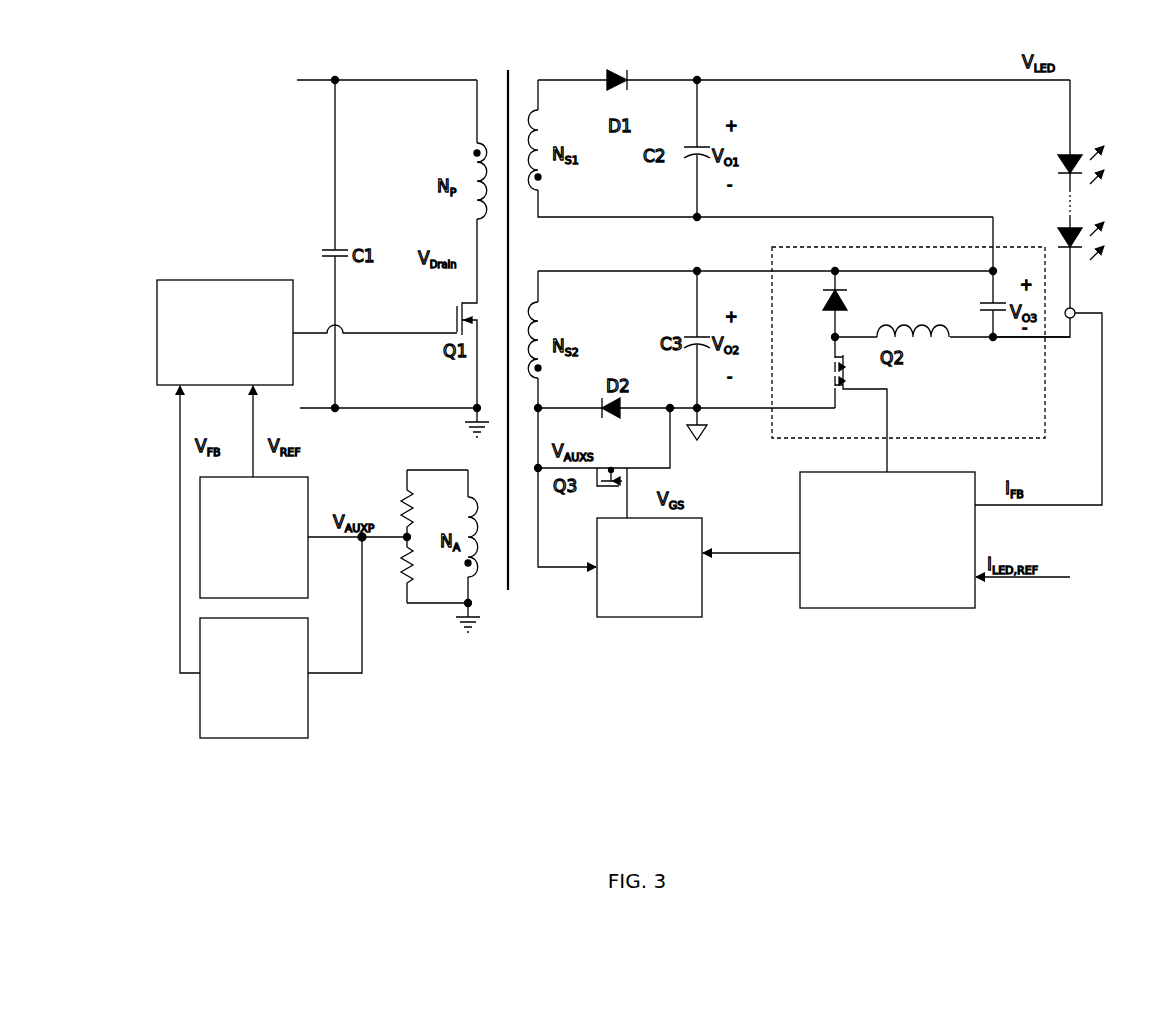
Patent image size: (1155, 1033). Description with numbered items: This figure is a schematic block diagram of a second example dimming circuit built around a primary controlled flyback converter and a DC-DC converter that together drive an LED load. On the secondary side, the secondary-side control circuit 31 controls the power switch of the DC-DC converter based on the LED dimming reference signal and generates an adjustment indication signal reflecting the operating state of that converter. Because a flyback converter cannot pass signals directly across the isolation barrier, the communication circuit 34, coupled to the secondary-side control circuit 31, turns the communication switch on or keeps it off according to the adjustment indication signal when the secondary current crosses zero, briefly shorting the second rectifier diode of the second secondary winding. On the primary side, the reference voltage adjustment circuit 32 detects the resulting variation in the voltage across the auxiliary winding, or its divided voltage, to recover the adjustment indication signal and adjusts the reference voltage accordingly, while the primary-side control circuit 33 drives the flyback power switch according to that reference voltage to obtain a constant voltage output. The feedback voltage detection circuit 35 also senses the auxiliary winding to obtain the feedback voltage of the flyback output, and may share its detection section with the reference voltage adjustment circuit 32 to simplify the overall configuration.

The secondary-side control circuit 31 is at (940, 608).
The reference voltage adjustment circuit 32 is at (308, 490).
The primary-side control circuit 33 is at (243, 280).
The communication circuit 34 is at (650, 617).
The feedback voltage detection circuit 35 is at (268, 738).